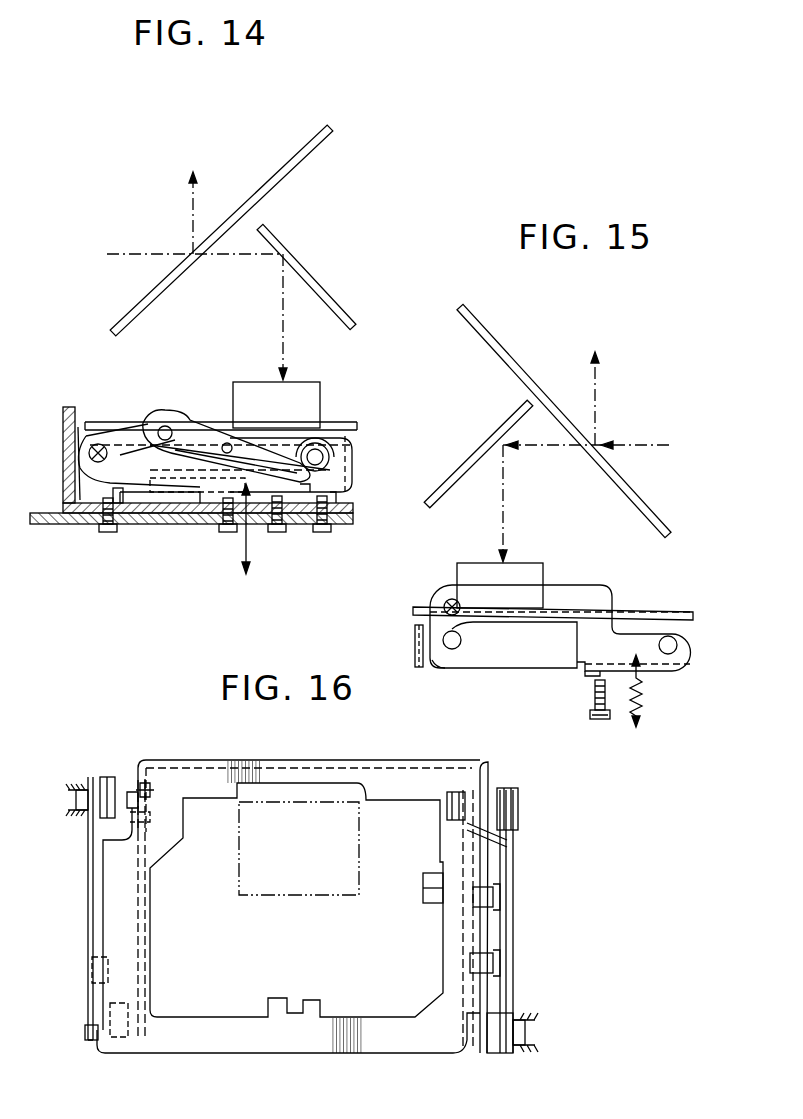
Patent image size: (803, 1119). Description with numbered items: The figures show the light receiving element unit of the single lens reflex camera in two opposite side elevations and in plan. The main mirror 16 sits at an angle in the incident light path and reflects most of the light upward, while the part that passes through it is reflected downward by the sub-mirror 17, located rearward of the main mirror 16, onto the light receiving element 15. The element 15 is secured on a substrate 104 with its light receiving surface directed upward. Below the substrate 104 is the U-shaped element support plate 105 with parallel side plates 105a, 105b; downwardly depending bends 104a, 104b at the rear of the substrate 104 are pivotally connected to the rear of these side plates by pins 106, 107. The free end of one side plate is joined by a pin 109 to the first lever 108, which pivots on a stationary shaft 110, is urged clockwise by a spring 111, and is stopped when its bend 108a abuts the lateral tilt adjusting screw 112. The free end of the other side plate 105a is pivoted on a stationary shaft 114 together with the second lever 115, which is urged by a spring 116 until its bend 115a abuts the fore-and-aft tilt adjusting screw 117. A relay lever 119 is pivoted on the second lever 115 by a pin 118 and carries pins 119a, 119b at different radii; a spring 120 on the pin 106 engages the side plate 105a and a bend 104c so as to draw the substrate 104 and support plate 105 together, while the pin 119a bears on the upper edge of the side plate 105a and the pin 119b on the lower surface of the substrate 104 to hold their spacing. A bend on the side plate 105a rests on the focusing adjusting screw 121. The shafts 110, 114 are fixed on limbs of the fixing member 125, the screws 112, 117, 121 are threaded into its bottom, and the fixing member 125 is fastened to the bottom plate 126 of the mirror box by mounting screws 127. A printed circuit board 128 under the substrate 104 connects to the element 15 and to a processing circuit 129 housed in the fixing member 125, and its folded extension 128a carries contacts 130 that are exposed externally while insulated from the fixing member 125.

In FIG. 14, the light receiving element 15 is at (303, 382).
In FIG. 15, the light receiving element 15 is at (521, 563).
In FIG. 16, the light receiving element 15 is at (312, 895).
In FIG. 14, the main mirror 16 is at (275, 181).
In FIG. 15, the main mirror 16 is at (522, 371).
In FIG. 14, the sub-mirror 17 is at (318, 286).
In FIG. 15, the sub-mirror 17 is at (487, 441).
In FIG. 14, the substrate 104 is at (106, 421).
In FIG. 15, the substrate 104 is at (630, 611).
In FIG. 16, the substrate 104 is at (222, 1017).
In FIG. 16, the bend 104a is at (509, 840).
In FIG. 15, the bend 104b is at (440, 664).
In FIG. 16, the bend 104b is at (130, 760).
In FIG. 16, the bend 104c is at (423, 883).
In FIG. 14, the element support plate 105 is at (350, 466).
In FIG. 15, the element support plate 105 is at (415, 641).
In FIG. 16, the element support plate 105 is at (480, 768).
In FIG. 16, the side plate 105a is at (473, 975).
In FIG. 15, the side plate 105b is at (514, 660).
In FIG. 16, the side plate 105b is at (140, 900).
In FIG. 16, the pin 106 is at (447, 810).
In FIG. 15, the pin 107 is at (455, 650).
In FIG. 16, the pin 107 is at (150, 790).
In FIG. 15, the first lever 108 is at (563, 598).
In FIG. 16, the first lever 108 is at (88, 856).
In FIG. 15, the bend 108a is at (584, 677).
In FIG. 16, the bend 108a is at (92, 968).
In FIG. 15, the pin 109 is at (668, 656).
In FIG. 16, the pin 109 is at (95, 1040).
In FIG. 15, the stationary shaft 110 is at (446, 600).
In FIG. 16, the stationary shaft 110 is at (104, 776).
In FIG. 15, the spring 111 is at (644, 700).
In FIG. 15, the lateral tilt adjusting screw 112 is at (592, 705).
In FIG. 14, the stationary shaft 114 is at (88, 458).
In FIG. 16, the stationary shaft 114 is at (500, 1053).
In FIG. 14, the second lever 115 is at (136, 503).
In FIG. 16, the second lever 115 is at (514, 995).
In FIG. 14, the bend 115a is at (336, 496).
In FIG. 14, the spring 116 is at (247, 553).
In FIG. 14, the fore-and-aft tilt adjusting screw 117 is at (322, 532).
In FIG. 14, the pin 118 is at (325, 455).
In FIG. 16, the pin 118 is at (505, 788).
In FIG. 14, the relay lever 119 is at (183, 422).
In FIG. 16, the relay lever 119 is at (512, 917).
In FIG. 14, the pin 119a is at (227, 443).
In FIG. 16, the pin 119a is at (500, 880).
In FIG. 14, the pin 119b is at (167, 426).
In FIG. 16, the pin 119b is at (500, 955).
In FIG. 14, the spring 120 is at (195, 505).
In FIG. 16, the spring 120 is at (462, 846).
In FIG. 14, the focusing adjusting screw 121 is at (279, 532).
In FIG. 14, the fixing member 125 is at (175, 512).
In FIG. 14, the bottom plate 126 is at (55, 524).
In FIG. 14, the mounting screws 127 is at (105, 528).
In FIG. 14, the printed circuit board 128 is at (137, 430).
In FIG. 14, the extension 128a is at (80, 425).
In FIG. 14, the processing circuit 129 is at (128, 530).
In FIG. 14, the contacts 130 is at (68, 444).